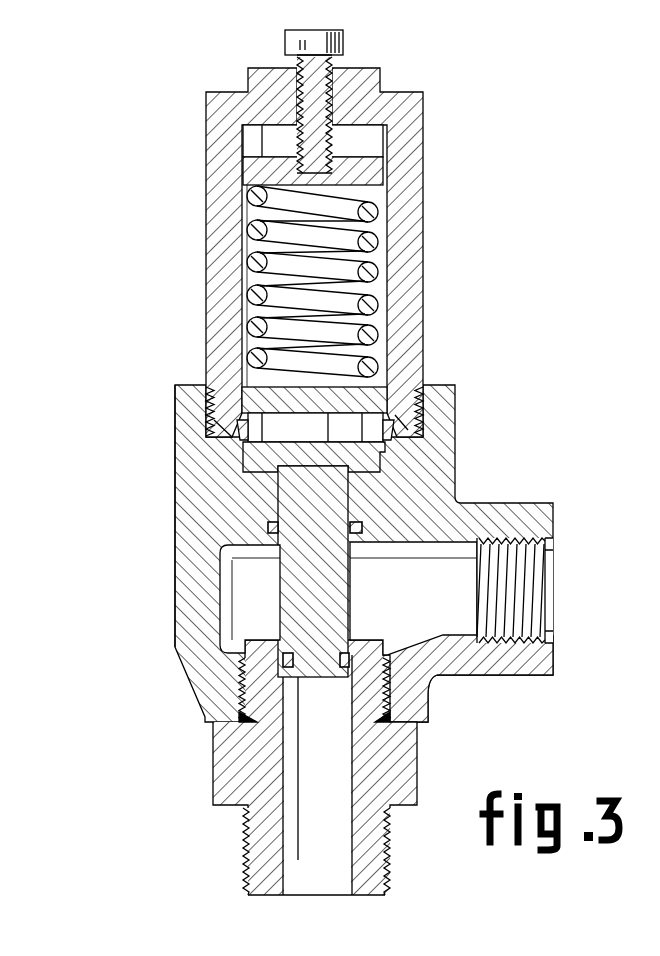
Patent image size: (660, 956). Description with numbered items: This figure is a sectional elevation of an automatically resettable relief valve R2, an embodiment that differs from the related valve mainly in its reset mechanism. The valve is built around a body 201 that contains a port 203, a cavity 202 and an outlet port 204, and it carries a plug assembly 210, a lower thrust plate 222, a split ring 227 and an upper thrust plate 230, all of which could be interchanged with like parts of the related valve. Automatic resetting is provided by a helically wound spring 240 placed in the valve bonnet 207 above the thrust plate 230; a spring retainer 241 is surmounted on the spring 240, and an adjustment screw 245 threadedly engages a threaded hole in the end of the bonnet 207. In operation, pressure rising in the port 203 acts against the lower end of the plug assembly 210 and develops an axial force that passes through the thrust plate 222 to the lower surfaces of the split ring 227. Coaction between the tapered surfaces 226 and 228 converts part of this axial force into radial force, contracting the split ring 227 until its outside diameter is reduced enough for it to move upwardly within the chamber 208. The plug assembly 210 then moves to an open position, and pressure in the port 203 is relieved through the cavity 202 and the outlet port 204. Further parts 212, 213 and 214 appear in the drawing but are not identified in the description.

The body 201 is at (208, 668).
The cavity 202 is at (232, 600).
The port 203 is at (342, 853).
The outlet port 204 is at (518, 612).
The valve bonnet 207 is at (407, 247).
The chamber 208 is at (385, 326).
The plug assembly 210 is at (356, 595).
The cup liner 212 is at (282, 572).
The upper seal ring 213 is at (272, 534).
The lower seal ring 214 is at (345, 668).
The thrust plate 222 is at (247, 465).
The tapered surface 226 is at (400, 433).
The split ring 227 is at (237, 438).
The tapered surface 228 is at (425, 405).
The thrust plate 230 is at (240, 390).
The helically wound spring 240 is at (248, 230).
The spring retainer 241 is at (388, 165).
The adjustment screw 245 is at (313, 92).
The relief valve R2 is at (168, 557).